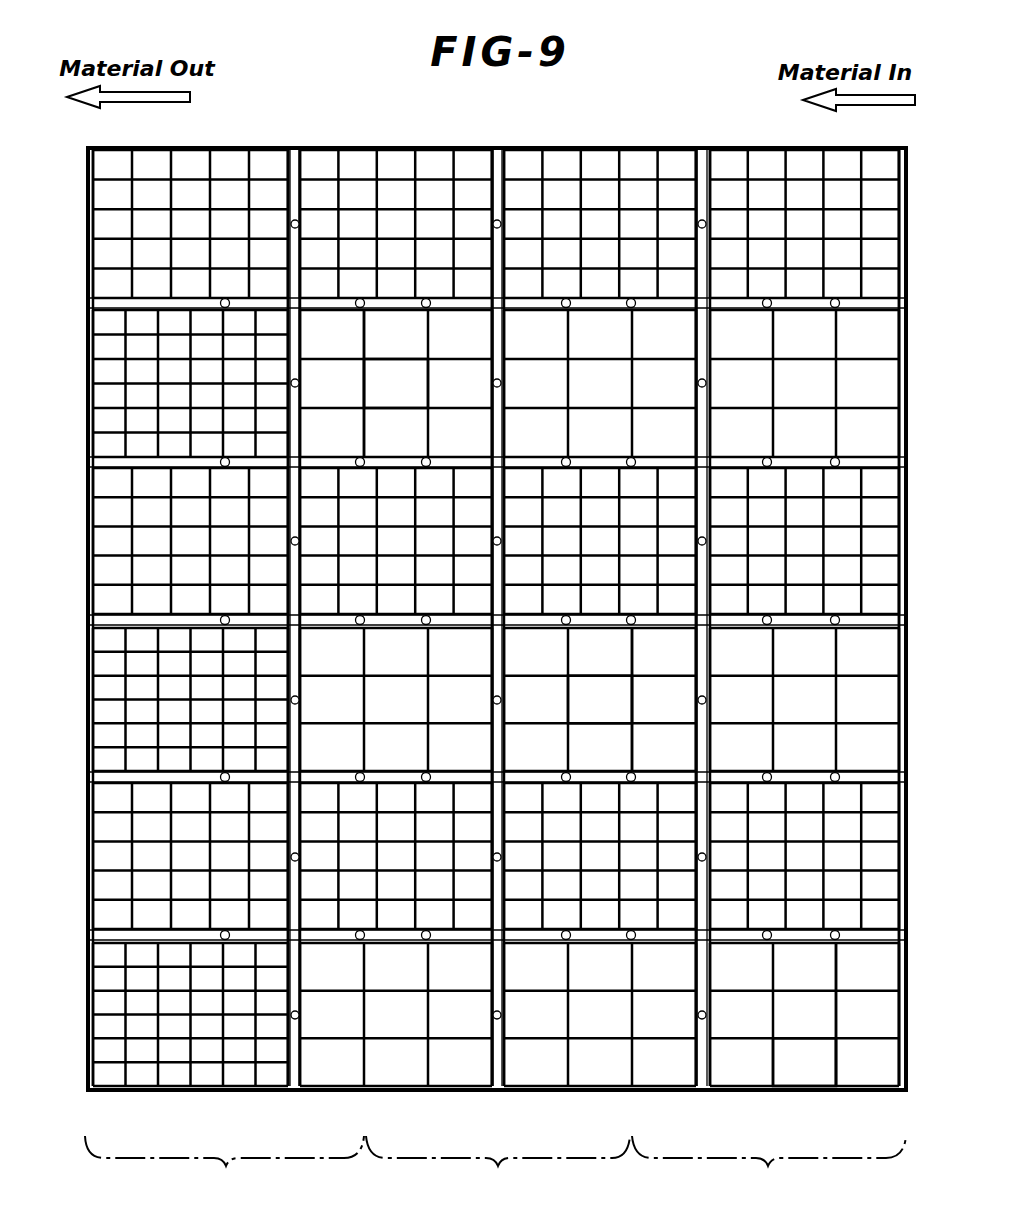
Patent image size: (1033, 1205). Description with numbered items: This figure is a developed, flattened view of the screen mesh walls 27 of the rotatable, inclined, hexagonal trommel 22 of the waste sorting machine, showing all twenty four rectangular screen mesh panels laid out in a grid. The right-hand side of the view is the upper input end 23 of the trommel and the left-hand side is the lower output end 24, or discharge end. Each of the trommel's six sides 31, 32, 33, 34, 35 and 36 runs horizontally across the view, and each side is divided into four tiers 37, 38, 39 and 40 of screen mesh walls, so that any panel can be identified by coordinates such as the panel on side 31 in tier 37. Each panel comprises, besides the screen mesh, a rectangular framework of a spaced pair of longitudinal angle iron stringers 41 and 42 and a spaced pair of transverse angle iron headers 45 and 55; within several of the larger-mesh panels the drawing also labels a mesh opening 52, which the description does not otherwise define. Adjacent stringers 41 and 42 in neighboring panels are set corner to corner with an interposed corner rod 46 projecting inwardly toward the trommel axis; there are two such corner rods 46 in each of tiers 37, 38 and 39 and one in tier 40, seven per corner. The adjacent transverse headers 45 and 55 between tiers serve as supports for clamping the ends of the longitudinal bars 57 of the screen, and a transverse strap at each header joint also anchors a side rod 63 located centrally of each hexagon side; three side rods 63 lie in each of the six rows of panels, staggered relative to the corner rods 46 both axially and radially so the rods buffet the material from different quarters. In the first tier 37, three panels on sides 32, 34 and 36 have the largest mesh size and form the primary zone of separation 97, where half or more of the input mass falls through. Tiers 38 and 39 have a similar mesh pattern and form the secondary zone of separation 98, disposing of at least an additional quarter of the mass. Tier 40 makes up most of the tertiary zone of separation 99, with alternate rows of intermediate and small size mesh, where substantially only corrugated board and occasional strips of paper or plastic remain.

The hexagonal trommel 22 is at (338, 112).
The upper input end 23 is at (912, 215).
The lower output end 24 is at (87, 170).
The screen mesh walls 27 is at (606, 125).
The first trommel side 31 is at (100, 234).
The second trommel side 32 is at (100, 367).
The third trommel side 33 is at (104, 517).
The fourth trommel side 34 is at (104, 694).
The fifth trommel side 35 is at (102, 857).
The sixth trommel side 36 is at (102, 1006).
The first tier 37 is at (806, 146).
The second tier 38 is at (547, 146).
The third tier 39 is at (416, 146).
The fourth tier 40 is at (250, 146).
The longitudinal angle iron stringer 41 is at (886, 300).
The longitudinal angle iron stringer 42 is at (888, 148).
The transverse angle iron header 45 is at (298, 1086).
The corner rod 46 is at (629, 307).
The screen panel opening 52 is at (425, 388).
The transverse angle iron header 55 is at (291, 1082).
The longitudinal bar 57 is at (388, 323).
The side rod 63 is at (496, 221).
The primary zone of separation 97 is at (769, 1168).
The secondary zone of separation 98 is at (498, 1168).
The tertiary zone of separation 99 is at (224, 1168).